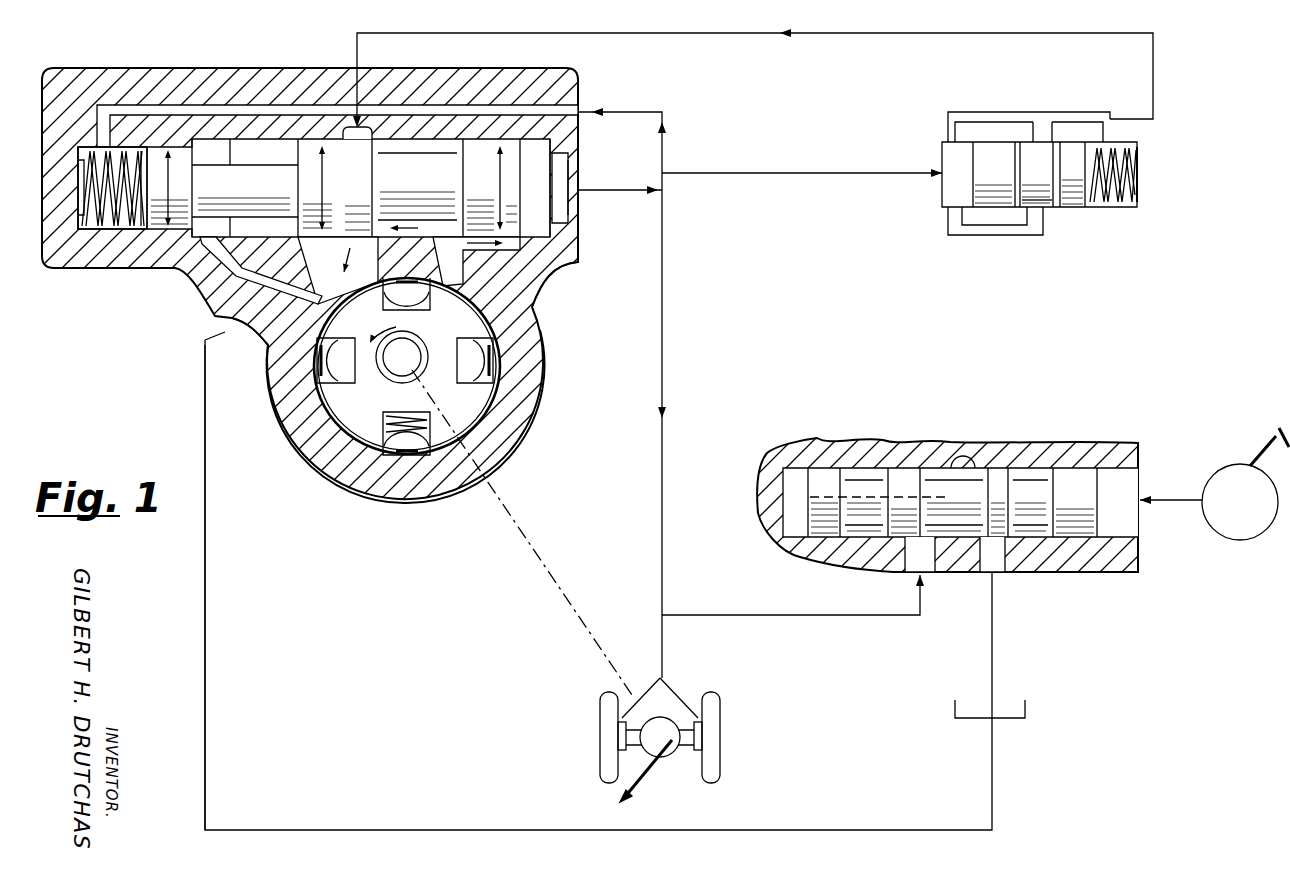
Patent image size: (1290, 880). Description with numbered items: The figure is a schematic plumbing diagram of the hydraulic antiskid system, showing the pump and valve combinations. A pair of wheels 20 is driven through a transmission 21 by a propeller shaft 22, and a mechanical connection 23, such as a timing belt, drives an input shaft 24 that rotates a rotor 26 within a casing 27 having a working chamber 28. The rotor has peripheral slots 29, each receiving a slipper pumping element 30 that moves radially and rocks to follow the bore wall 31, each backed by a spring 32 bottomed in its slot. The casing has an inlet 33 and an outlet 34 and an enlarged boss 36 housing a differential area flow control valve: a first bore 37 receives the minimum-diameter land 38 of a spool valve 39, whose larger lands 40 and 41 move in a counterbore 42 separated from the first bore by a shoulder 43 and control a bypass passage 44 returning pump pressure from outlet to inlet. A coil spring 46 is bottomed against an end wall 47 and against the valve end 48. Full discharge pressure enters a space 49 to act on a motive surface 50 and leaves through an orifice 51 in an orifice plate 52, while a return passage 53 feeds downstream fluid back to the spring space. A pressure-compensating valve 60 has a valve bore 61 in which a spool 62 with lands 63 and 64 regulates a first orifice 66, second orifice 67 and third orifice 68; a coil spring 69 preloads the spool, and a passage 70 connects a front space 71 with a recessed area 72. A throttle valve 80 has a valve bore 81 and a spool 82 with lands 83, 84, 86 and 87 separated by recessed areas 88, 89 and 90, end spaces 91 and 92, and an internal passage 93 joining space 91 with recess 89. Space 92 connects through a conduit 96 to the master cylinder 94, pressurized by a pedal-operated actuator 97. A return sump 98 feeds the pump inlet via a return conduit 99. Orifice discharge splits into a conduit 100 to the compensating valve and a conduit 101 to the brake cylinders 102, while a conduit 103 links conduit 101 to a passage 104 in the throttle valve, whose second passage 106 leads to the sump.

The wheels 20 is at (608, 750).
The transmission 21 is at (672, 724).
The propeller shaft 22 is at (640, 786).
The mechanical connection 23 is at (553, 572).
The input shaft 24 is at (416, 368).
The rotor 26 is at (320, 340).
The casing 27 is at (296, 421).
The working chamber 28 is at (346, 424).
The slots 29 is at (372, 300).
The pumping element 30 is at (412, 298).
The bore wall 31 is at (497, 396).
The spring 32 is at (408, 413).
The inlet 33 is at (336, 252).
The outlet 34 is at (447, 275).
The enlarged boss 36 is at (62, 242).
The first bore 37 is at (128, 230).
The land 38 is at (169, 188).
The spool valve 39 is at (202, 262).
The land 40 is at (336, 188).
The land 41 is at (493, 188).
The counterbore 42 is at (228, 224).
The shoulder 43 is at (245, 150).
The bypass passage 44 is at (388, 222).
The coil spring 46 is at (86, 174).
The end wall 47 is at (87, 230).
The end of the valve 48 is at (80, 150).
The space 49 is at (543, 258).
The motive surface 50 is at (530, 215).
The orifice 51 is at (576, 208).
The orifice plate 52 is at (576, 167).
The return passage 53 is at (285, 104).
The pressure-compensating valve 60 is at (926, 207).
The valve bore 61 is at (1138, 192).
The spool 62 is at (1026, 192).
The land 63 is at (1070, 198).
The land 64 is at (982, 192).
The first orifice 66 is at (948, 135).
The second orifice 67 is at (1032, 140).
The third orifice 68 is at (1060, 141).
The coil spring 69 is at (1120, 170).
The passage 70 is at (990, 234).
The front space 71 is at (953, 196).
The recessed area 72 is at (1046, 204).
The throttle valve 80 is at (832, 437).
The valve bore 81 is at (966, 456).
The spool 82 is at (965, 514).
The land 83 is at (822, 526).
The land 84 is at (906, 478).
The land 86 is at (998, 480).
The land 87 is at (1075, 480).
The recessed area 88 is at (860, 528).
The recessed area 89 is at (974, 530).
The recessed area 90 is at (1038, 534).
The space 91 is at (790, 465).
The space 92 is at (1112, 480).
The internal passage 93 is at (883, 470).
The master cylinder 94 is at (1236, 540).
The conduit 96 is at (1168, 504).
The pedal-operated actuator 97 is at (1271, 441).
The return sump 98 is at (1027, 712).
The return conduit 99 is at (208, 624).
The conduit 100 is at (778, 172).
The conduit 101 is at (656, 470).
The brake cylinders 102 is at (617, 729).
The conduit 103 is at (770, 616).
The passage 104 is at (917, 554).
The second passage 106 is at (996, 556).